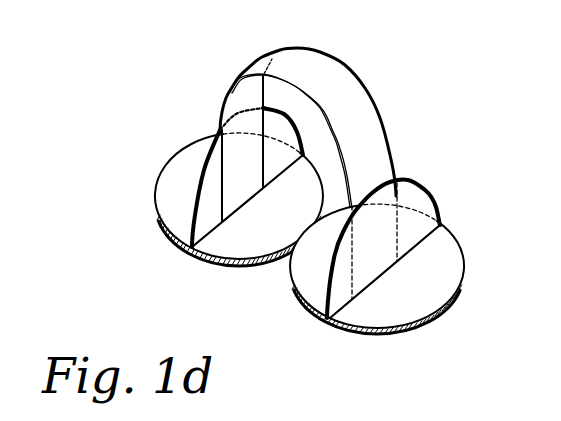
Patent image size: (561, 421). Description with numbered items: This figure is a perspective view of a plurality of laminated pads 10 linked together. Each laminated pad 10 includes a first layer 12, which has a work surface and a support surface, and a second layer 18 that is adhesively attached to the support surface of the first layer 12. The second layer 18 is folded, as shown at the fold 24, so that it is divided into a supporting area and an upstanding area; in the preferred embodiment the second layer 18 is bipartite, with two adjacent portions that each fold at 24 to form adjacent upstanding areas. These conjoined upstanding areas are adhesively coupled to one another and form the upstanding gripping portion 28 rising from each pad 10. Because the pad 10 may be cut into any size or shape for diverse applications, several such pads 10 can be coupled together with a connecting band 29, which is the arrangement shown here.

The laminated pad 10 is at (331, 215).
The first layer 12 is at (309, 231).
The second layer 18 is at (239, 240).
The fold 24 is at (228, 266).
The gripping portion 28 is at (203, 138).
The connecting band 29 is at (333, 87).